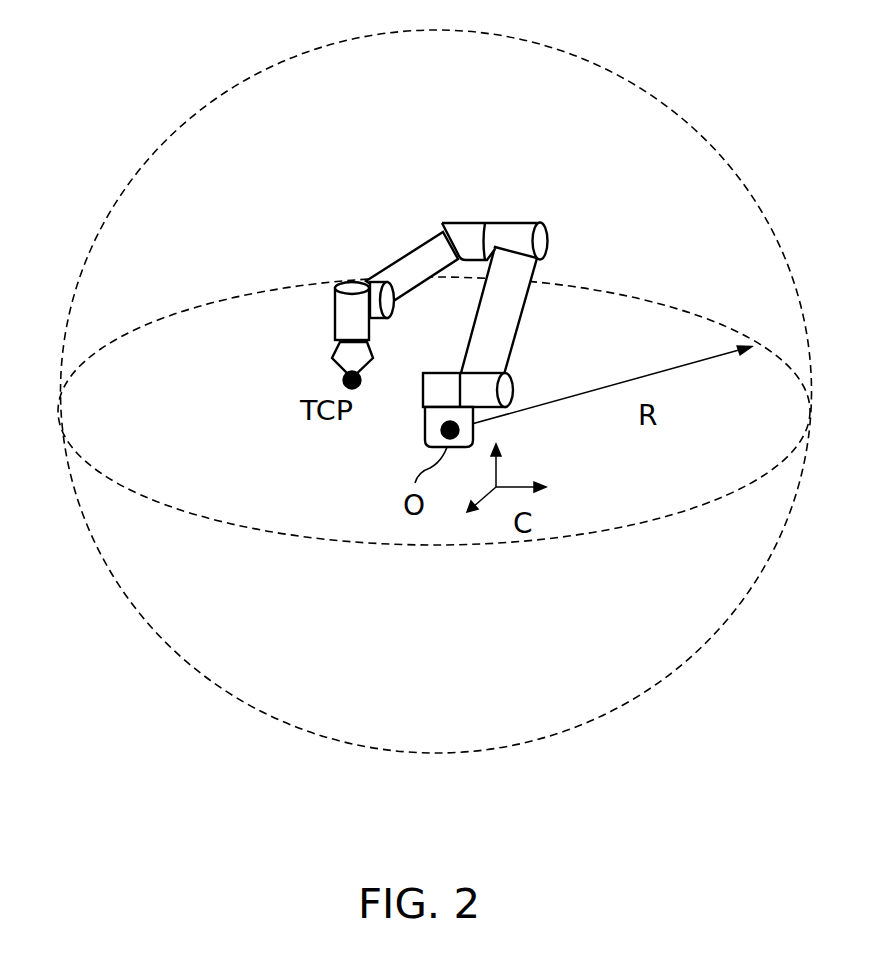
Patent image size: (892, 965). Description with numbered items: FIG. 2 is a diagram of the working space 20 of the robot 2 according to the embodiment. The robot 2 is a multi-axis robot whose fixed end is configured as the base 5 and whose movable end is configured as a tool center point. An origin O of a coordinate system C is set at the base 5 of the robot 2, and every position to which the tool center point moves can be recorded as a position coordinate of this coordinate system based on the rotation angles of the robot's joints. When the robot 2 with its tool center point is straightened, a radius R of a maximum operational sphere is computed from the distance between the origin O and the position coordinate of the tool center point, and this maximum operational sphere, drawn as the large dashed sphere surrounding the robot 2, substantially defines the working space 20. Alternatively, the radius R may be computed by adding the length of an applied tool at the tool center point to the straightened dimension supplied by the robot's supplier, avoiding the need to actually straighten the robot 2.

The working space 20 is at (217, 97).
The robot 2 is at (440, 289).
The base 5 is at (423, 420).